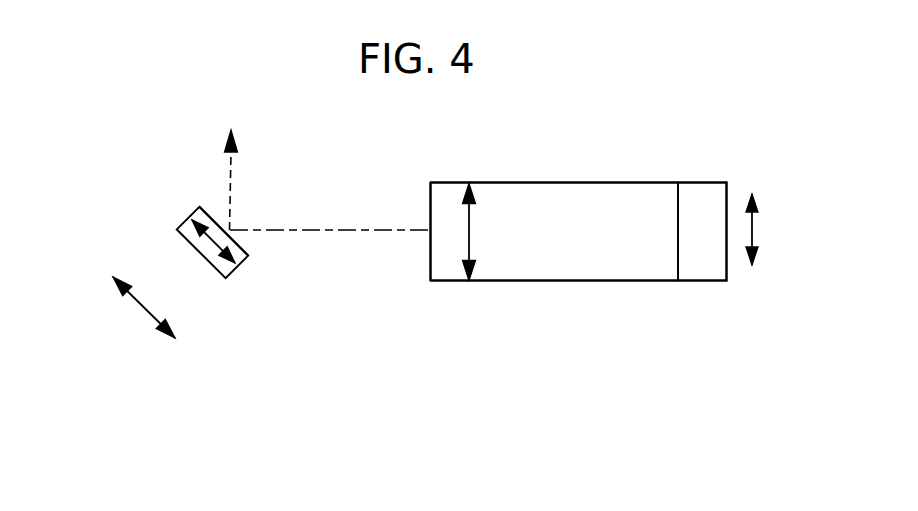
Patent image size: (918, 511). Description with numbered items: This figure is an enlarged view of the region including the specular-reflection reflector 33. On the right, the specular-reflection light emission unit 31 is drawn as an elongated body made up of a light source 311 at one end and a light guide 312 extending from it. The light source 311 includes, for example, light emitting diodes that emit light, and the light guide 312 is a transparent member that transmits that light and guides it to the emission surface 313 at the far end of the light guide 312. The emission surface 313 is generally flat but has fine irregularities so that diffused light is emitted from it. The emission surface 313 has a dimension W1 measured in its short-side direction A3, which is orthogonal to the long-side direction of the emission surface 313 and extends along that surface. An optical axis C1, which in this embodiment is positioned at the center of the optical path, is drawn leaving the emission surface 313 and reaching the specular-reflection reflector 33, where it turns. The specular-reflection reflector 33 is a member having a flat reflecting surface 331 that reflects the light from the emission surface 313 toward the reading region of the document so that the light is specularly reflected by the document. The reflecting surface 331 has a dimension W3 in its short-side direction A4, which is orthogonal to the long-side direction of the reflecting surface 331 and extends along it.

The specular-reflection light emission unit 31 is at (580, 302).
The light source 311 is at (707, 281).
The light guide 312 is at (608, 281).
The emission surface 313 is at (430, 258).
The specular-reflection reflector 33 is at (201, 238).
The reflecting surface 331 is at (208, 217).
The dimension of the emission surface W1 is at (495, 232).
The dimension of the reflecting surface W3 is at (193, 253).
The short-side direction of the emission surface A3 is at (757, 212).
The short-side direction of the reflecting surface A4 is at (136, 310).
The optical axis C1 is at (230, 167).